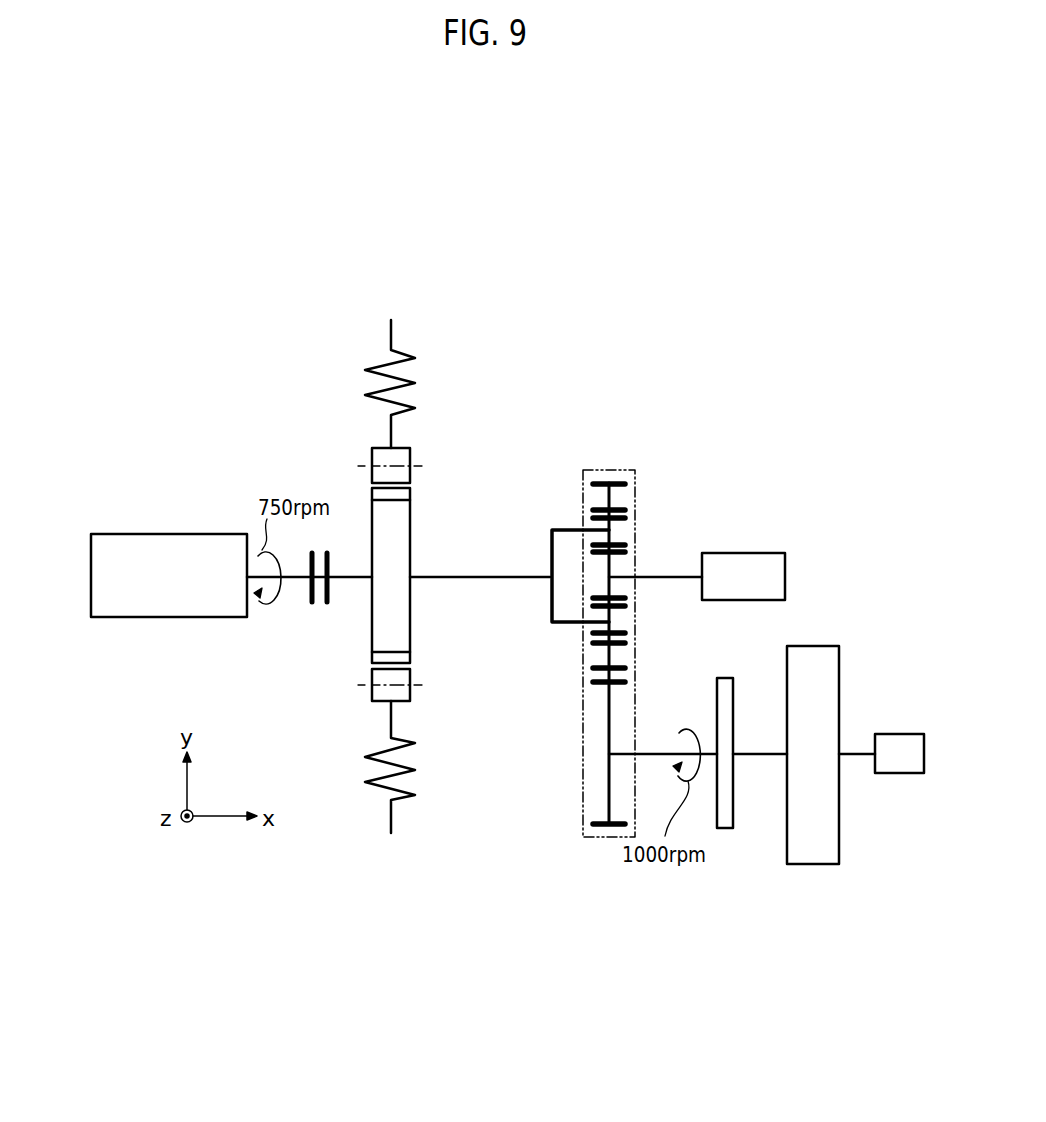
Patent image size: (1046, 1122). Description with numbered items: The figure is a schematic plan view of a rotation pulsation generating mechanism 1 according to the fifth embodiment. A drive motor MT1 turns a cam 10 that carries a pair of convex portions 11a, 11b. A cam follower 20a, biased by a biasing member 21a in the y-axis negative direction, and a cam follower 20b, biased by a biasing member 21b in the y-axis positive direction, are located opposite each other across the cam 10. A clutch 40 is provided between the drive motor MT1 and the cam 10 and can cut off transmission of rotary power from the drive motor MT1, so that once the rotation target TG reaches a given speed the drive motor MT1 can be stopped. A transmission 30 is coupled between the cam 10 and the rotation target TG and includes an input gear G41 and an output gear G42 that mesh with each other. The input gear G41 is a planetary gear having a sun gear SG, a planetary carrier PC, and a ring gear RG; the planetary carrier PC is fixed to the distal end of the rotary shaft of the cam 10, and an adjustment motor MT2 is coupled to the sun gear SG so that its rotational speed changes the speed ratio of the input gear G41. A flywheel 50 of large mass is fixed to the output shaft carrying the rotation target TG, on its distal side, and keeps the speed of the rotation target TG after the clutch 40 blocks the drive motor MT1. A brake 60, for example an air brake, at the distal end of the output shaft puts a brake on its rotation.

The rotation pulsation generating mechanism 1 is at (558, 438).
The cam 10 is at (410, 552).
The convex portion 11a is at (408, 496).
The convex portion 11b is at (410, 654).
The cam follower 20a is at (408, 459).
The cam follower 20b is at (410, 697).
The biasing member 21a is at (412, 372).
The biasing member 21b is at (412, 790).
The transmission 30 is at (636, 492).
The clutch 40 is at (312, 604).
The flywheel 50 is at (813, 655).
The brake 60 is at (900, 776).
The sun gear SG is at (612, 587).
The planetary carrier PC is at (612, 620).
The ring gear RG is at (612, 652).
The input gear G41 is at (683, 585).
The output gear G42 is at (609, 780).
The rotation target TG is at (725, 830).
The drive motor MT1 is at (169, 575).
The adjustment motor MT2 is at (743, 576).